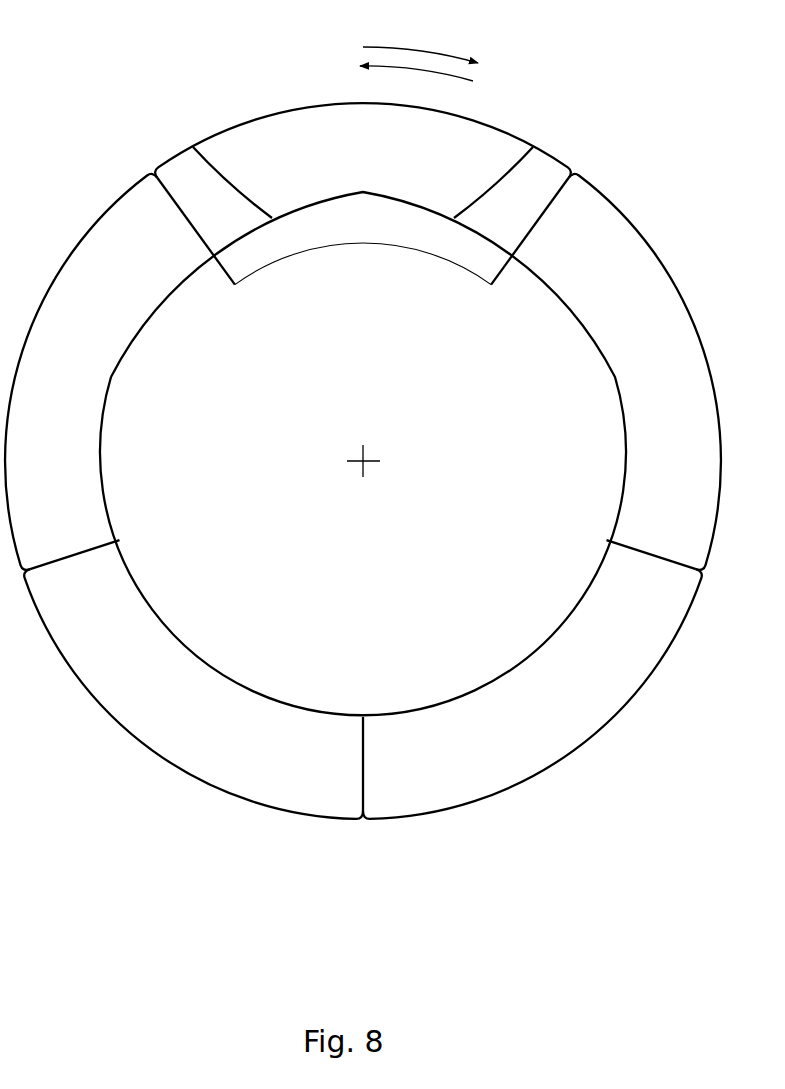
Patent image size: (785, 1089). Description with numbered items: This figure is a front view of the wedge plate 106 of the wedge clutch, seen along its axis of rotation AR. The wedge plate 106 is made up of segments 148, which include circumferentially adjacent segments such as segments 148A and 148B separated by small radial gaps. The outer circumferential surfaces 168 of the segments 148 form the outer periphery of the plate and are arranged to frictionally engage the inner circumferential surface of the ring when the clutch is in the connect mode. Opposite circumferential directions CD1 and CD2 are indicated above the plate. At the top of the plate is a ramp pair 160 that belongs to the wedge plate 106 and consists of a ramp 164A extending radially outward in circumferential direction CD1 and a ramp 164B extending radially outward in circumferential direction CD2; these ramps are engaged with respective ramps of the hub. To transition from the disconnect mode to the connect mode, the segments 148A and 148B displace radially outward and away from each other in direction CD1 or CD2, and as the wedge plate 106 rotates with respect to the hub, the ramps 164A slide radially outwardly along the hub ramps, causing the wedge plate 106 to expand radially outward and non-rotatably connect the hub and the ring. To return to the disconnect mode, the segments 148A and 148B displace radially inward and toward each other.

The wedge plate 106 is at (609, 52).
The segments 148 is at (242, 118).
The segment 148A is at (683, 367).
The segment 148B is at (563, 723).
The ramp pair 160 is at (360, 243).
The ramp 164A is at (190, 147).
The ramp 164B is at (535, 147).
The outer circumferential surface 168 is at (55, 275).
The axis of rotation AR is at (365, 466).
The circumferential direction CD1 is at (415, 47).
The circumferential direction CD2 is at (457, 78).